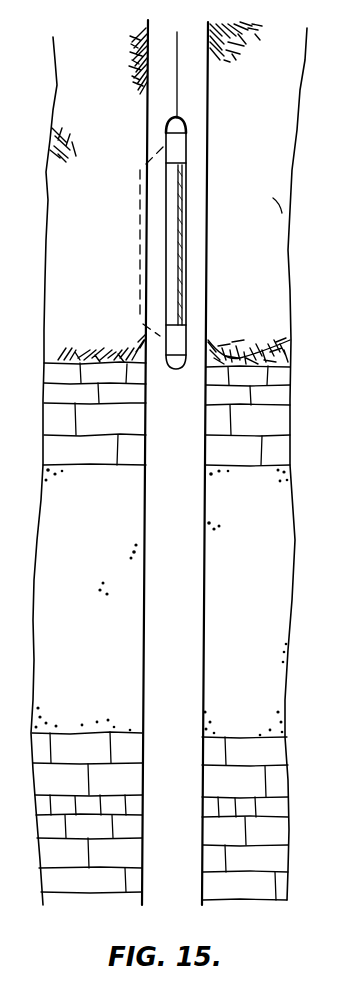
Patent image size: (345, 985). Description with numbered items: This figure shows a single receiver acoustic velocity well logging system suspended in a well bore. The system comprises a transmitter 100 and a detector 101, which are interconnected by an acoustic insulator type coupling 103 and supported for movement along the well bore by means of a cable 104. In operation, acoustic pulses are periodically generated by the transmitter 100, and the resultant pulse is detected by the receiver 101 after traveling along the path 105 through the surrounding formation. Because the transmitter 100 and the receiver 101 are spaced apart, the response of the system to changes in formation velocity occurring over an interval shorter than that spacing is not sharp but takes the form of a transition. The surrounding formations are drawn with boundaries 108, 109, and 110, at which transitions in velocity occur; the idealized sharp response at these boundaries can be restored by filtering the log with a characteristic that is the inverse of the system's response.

The transmitter 100 is at (186, 148).
The detector 101 is at (180, 330).
The acoustic insulator type coupling 103 is at (178, 256).
The cable 104 is at (178, 101).
The path 105 is at (140, 258).
The boundary 108 is at (284, 356).
The boundary 109 is at (268, 470).
The boundary 110 is at (289, 727).